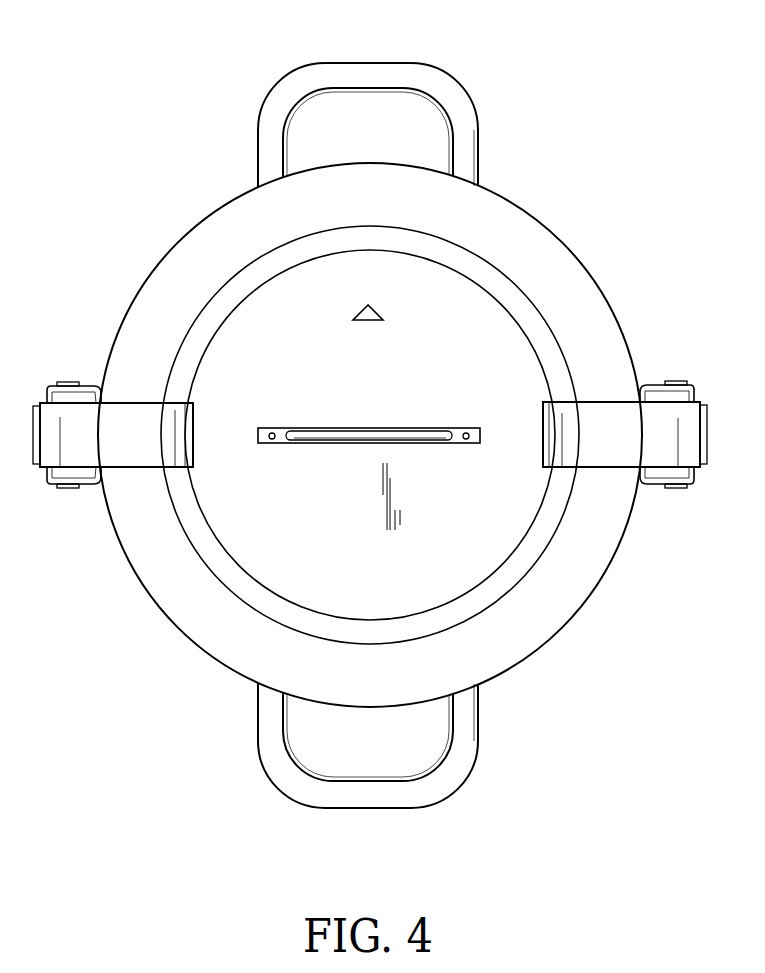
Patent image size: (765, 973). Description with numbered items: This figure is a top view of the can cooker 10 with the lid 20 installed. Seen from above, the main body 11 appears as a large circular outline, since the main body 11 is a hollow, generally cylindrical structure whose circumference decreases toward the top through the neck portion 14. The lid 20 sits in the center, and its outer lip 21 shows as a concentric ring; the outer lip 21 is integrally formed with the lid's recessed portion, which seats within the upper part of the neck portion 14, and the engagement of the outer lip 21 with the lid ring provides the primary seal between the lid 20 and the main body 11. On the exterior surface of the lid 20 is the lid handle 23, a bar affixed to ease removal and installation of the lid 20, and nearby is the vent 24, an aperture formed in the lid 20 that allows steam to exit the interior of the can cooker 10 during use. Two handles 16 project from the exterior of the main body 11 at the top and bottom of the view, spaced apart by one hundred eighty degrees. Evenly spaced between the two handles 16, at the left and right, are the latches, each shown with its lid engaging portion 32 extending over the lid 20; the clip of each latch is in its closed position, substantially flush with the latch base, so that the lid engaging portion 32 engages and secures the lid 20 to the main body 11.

The can cooker 10 is at (638, 125).
The main body 11 is at (583, 657).
The neck portion 14 is at (597, 338).
The handles 16 is at (348, 63).
The lid 20 is at (270, 328).
The outer lip 21 is at (503, 292).
The lid handle 23 is at (343, 445).
The vent 24 is at (373, 322).
The lid engaging portion 32 is at (128, 417).